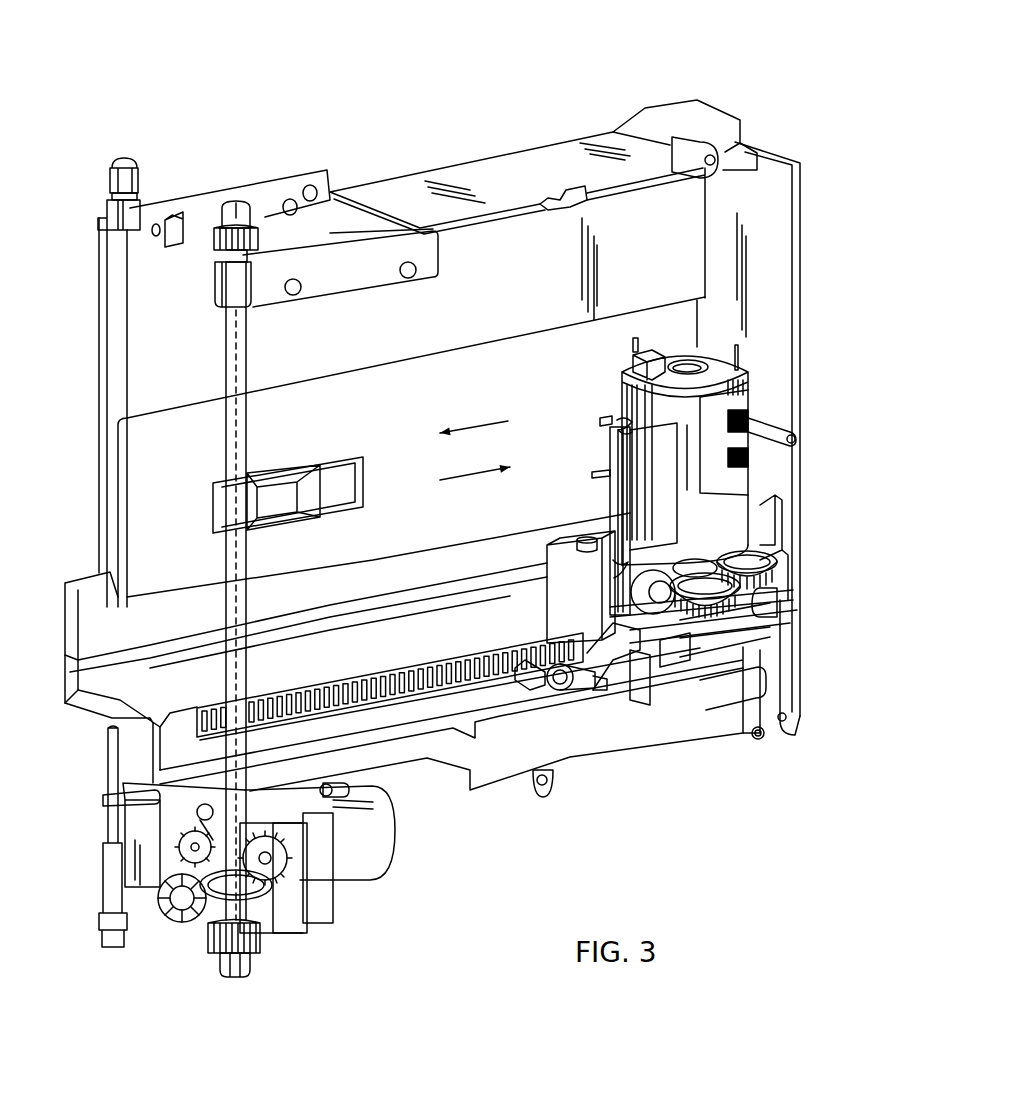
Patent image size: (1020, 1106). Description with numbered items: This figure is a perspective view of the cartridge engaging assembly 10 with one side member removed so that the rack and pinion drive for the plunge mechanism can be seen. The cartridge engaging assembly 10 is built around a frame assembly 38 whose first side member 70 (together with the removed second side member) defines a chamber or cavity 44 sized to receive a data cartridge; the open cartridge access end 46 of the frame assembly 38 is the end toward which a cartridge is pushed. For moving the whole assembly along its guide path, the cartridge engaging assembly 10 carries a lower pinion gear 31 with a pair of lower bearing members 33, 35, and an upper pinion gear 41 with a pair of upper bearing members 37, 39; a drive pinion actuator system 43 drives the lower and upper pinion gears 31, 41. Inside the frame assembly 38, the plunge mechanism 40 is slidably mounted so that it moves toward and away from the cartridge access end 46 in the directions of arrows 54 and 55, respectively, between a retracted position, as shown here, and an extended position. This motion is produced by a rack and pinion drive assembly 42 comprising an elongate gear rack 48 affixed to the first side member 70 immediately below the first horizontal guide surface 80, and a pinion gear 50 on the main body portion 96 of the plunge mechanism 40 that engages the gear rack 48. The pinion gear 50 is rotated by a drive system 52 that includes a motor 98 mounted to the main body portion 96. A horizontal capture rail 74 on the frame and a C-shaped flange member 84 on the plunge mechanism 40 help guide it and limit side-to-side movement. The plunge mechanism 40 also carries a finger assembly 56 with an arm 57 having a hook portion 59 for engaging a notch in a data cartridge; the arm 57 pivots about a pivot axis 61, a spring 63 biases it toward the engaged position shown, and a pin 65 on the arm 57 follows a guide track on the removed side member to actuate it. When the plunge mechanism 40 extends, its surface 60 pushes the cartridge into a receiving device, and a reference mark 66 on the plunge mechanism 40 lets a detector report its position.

The cartridge engaging assembly 10 is at (222, 98).
The lower pinion gear 31 is at (205, 937).
The lower bearing member 33 is at (100, 925).
The lower bearing member 35 is at (255, 968).
The upper bearing member 37 is at (104, 212).
The frame assembly 38 is at (714, 108).
The upper bearing member 39 is at (222, 205).
The plunge mechanism 40 is at (760, 468).
The upper pinion gear 41 is at (210, 248).
The rack and pinion drive assembly 42 is at (334, 715).
The drive pinion actuator system 43 is at (395, 848).
The chamber or cavity 44 is at (160, 383).
The cartridge access end 46 is at (99, 503).
The gear rack 48 is at (205, 705).
The pinion gear 50 is at (760, 740).
The drive system 52 is at (795, 512).
The arrow 54 is at (498, 422).
The arrow 55 is at (448, 478).
The finger assembly 56 is at (545, 700).
The arm 57 is at (615, 655).
The hook portion 59 is at (522, 640).
The surface 60 is at (590, 614).
The pivot axis 61 is at (790, 625).
The spring 63 is at (598, 488).
The pin 65 is at (590, 690).
The reference mark 66 is at (785, 448).
The first side member 70 is at (448, 165).
The horizontal capture rail 74 is at (75, 688).
The first horizontal guide surface 80 is at (100, 690).
The C-shaped flange member 84 is at (780, 580).
The main body portion 96 is at (785, 640).
The motor 98 is at (780, 395).